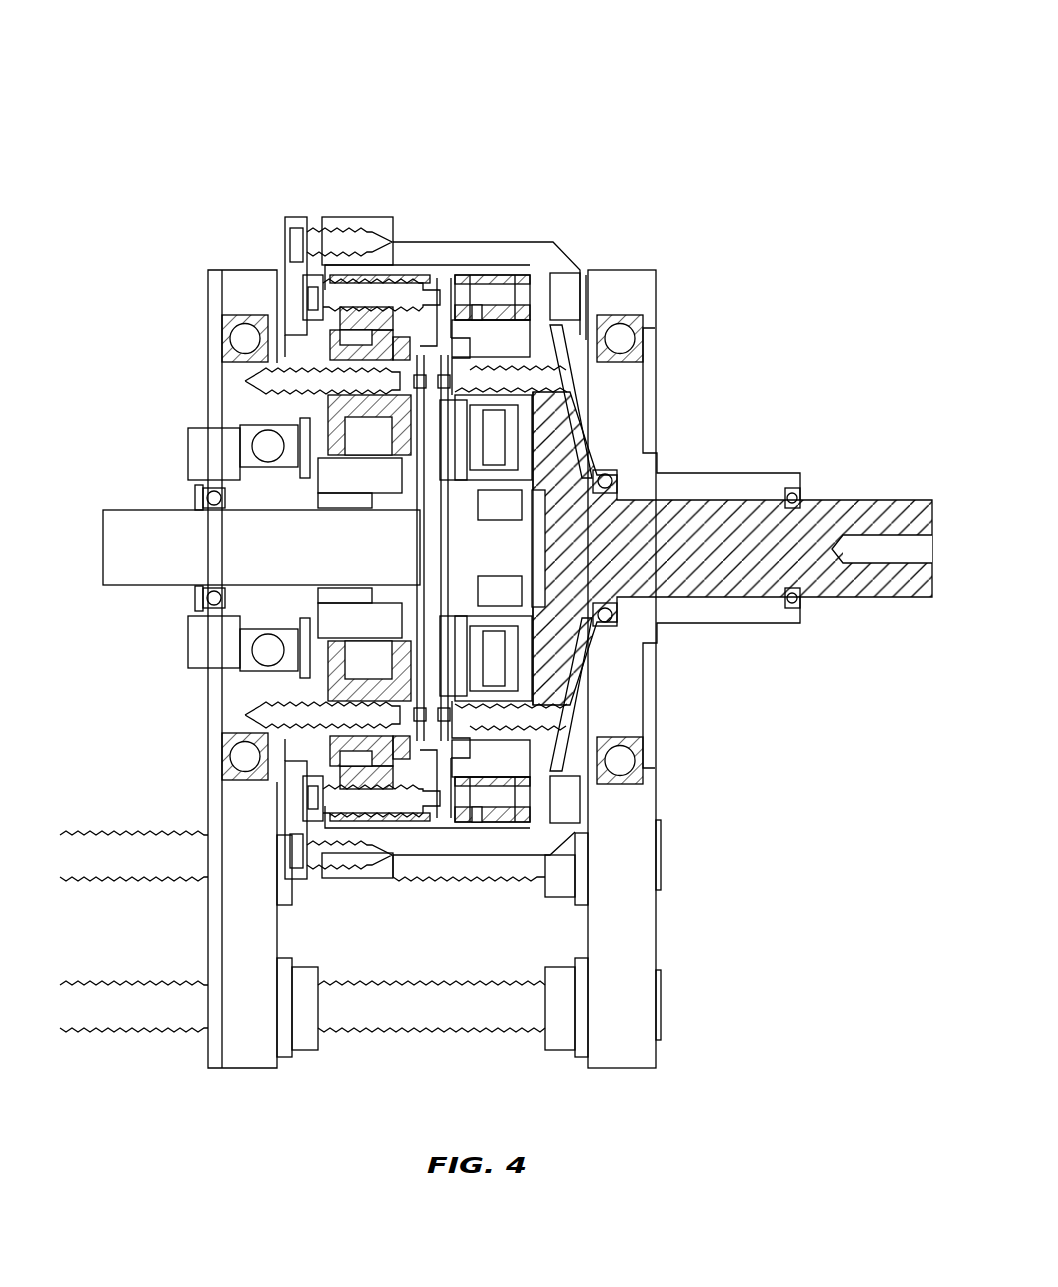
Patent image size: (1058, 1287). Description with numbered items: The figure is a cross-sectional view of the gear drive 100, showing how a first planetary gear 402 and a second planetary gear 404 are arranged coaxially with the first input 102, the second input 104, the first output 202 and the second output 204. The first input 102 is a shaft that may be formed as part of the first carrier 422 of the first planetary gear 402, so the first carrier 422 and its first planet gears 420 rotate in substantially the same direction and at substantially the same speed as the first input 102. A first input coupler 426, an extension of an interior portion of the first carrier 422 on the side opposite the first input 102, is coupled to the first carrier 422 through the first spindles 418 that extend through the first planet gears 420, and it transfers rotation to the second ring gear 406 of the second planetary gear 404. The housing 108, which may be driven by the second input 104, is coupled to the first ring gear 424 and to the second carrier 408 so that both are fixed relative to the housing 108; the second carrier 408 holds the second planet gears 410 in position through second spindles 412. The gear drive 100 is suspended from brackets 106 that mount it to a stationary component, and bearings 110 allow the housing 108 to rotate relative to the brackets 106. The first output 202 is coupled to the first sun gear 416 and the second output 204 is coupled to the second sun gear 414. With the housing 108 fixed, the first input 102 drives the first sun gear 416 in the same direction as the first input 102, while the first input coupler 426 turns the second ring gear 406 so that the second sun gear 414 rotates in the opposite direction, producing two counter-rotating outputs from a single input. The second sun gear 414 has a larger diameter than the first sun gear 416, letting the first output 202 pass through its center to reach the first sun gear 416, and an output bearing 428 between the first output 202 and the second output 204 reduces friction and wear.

The gear drive 100 is at (390, 125).
The first input 102 is at (880, 520).
The second input 104 is at (765, 480).
The brackets 106 is at (238, 1050).
The housing 108 is at (455, 245).
The bearings 110 is at (235, 760).
The first output 202 is at (130, 545).
The second output 204 is at (210, 452).
The first planetary gear 402 is at (512, 262).
The second planetary gear 404 is at (300, 348).
The second ring gear 406 is at (310, 345).
The second carrier 408 is at (335, 350).
The second planet gears 410 is at (360, 408).
The second spindles 412 is at (300, 390).
The second sun gear 414 is at (330, 470).
The first sun gear 416 is at (500, 600).
The first spindles 418 is at (618, 335).
The first planet gears 420 is at (548, 320).
The first carrier 422 is at (560, 430).
The first ring gear 424 is at (545, 330).
The first input coupler 426 is at (440, 330).
The output bearing 428 is at (200, 600).